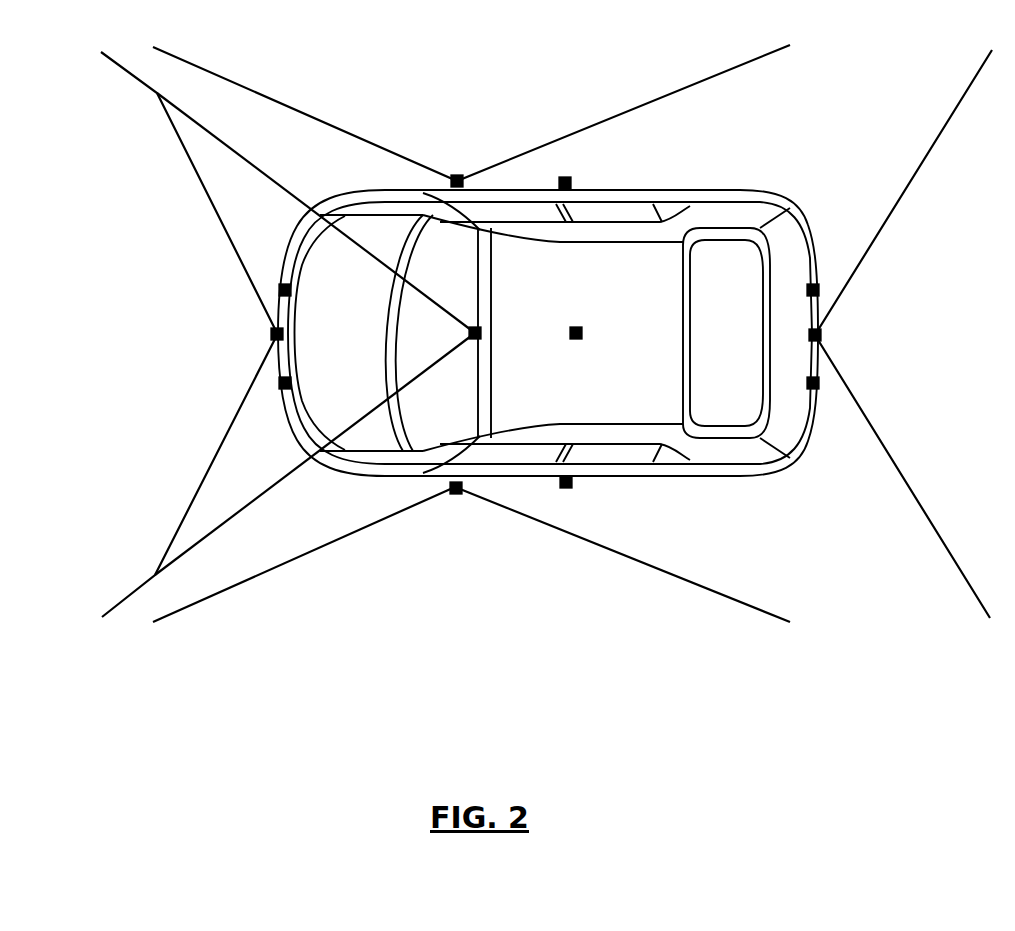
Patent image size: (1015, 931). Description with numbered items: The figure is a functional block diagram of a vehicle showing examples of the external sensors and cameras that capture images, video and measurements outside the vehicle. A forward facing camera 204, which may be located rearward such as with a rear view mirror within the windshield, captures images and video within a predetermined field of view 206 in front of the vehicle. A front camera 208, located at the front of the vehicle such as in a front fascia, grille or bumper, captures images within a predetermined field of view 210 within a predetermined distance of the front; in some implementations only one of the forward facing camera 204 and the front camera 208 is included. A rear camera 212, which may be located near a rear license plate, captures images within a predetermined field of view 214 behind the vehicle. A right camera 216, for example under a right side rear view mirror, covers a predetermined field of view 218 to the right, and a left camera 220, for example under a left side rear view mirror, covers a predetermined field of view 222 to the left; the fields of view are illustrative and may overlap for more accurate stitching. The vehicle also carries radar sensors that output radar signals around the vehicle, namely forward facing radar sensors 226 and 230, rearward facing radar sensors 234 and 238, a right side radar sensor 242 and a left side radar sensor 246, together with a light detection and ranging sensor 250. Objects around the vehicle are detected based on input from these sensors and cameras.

The forward facing camera 204 is at (475, 333).
The predetermined field of view 206 is at (260, 176).
The front camera 208 is at (272, 334).
The predetermined field of view 210 is at (195, 177).
The rear camera 212 is at (823, 335).
The predetermined field of view 214 is at (910, 183).
The right camera 216 is at (457, 178).
The predetermined field of view 218 is at (234, 82).
The left camera 220 is at (457, 492).
The predetermined field of view 222 is at (575, 536).
The forward facing radar sensor 226 is at (280, 290).
The forward facing radar sensor 230 is at (280, 383).
The rearward facing radar sensor 234 is at (820, 290).
The rearward facing radar sensor 238 is at (820, 383).
The right side radar sensor 242 is at (568, 181).
The left side radar sensor 246 is at (568, 488).
The light detection and ranging (LIDAR) sensor 250 is at (578, 339).